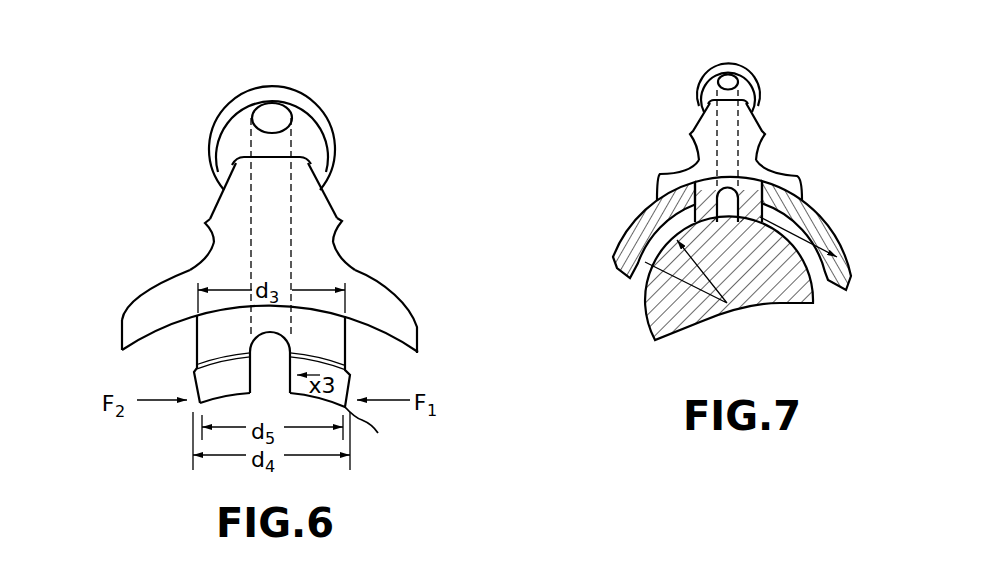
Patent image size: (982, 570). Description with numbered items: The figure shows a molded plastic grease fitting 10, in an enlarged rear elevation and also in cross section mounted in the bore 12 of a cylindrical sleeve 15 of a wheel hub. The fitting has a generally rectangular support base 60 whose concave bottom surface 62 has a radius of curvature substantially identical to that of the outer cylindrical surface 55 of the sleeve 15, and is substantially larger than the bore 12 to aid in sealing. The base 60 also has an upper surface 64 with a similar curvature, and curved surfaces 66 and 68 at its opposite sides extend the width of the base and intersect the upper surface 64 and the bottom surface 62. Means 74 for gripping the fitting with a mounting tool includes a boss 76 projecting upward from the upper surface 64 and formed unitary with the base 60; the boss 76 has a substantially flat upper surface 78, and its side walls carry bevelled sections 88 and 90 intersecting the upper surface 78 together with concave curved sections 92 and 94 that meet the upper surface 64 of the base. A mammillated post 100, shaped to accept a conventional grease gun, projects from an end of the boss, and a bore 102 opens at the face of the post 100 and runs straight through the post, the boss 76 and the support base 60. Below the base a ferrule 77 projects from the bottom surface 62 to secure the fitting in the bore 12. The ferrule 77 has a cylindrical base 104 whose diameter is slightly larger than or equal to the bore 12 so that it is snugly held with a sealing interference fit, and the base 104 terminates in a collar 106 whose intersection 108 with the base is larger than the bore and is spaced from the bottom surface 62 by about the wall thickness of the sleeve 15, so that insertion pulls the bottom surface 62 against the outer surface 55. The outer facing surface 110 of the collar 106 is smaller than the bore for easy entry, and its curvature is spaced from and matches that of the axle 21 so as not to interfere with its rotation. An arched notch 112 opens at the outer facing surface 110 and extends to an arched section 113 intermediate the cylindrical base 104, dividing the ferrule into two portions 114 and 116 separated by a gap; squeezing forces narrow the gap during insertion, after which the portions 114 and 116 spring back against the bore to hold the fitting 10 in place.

In FIG. 6, the grease fitting 10 is at (312, 90).
In FIG. 7, the grease fitting 10 is at (752, 62).
In FIG. 7, the bore 12 is at (678, 183).
In FIG. 7, the cylindrical sleeve 15 is at (623, 240).
In FIG. 7, the axle 21 is at (783, 307).
In FIG. 7, the outer cylindrical surface 55 is at (642, 203).
In FIG. 6, the support base 60 is at (140, 295).
In FIG. 6, the bottom surface 62 is at (133, 350).
In FIG. 7, the bottom surface 62 is at (778, 180).
In FIG. 6, the upper surface 64 is at (188, 270).
In FIG. 6, the curved surface 66 is at (123, 322).
In FIG. 6, the curved surface 68 is at (418, 337).
In FIG. 6, the means for gripping 74 is at (367, 222).
In FIG. 6, the boss 76 is at (332, 237).
In FIG. 6, the ferrule 77 is at (370, 414).
In FIG. 6, the upper surface 78 is at (233, 145).
In FIG. 6, the bevelled section 88 is at (332, 203).
In FIG. 6, the bevelled section 90 is at (210, 193).
In FIG. 6, the concave curved section 92 is at (337, 250).
In FIG. 6, the concave curved section 94 is at (207, 220).
In FIG. 6, the mammillated post 100 is at (330, 110).
In FIG. 6, the bore 102 is at (298, 147).
In FIG. 6, the cylindrical base 104 is at (268, 85).
In FIG. 6, the collar 106 is at (208, 385).
In FIG. 7, the collar 106 is at (760, 218).
In FIG. 6, the intersection 108 is at (243, 375).
In FIG. 7, the intersection 108 is at (758, 178).
In FIG. 6, the outer facing surface 110 is at (371, 435).
In FIG. 7, the outer facing surface 110 is at (697, 178).
In FIG. 6, the arched notch 112 is at (293, 350).
In FIG. 6, the arched section 113 is at (294, 327).
In FIG. 6, the portion 114 is at (368, 352).
In FIG. 6, the portion 116 is at (213, 340).